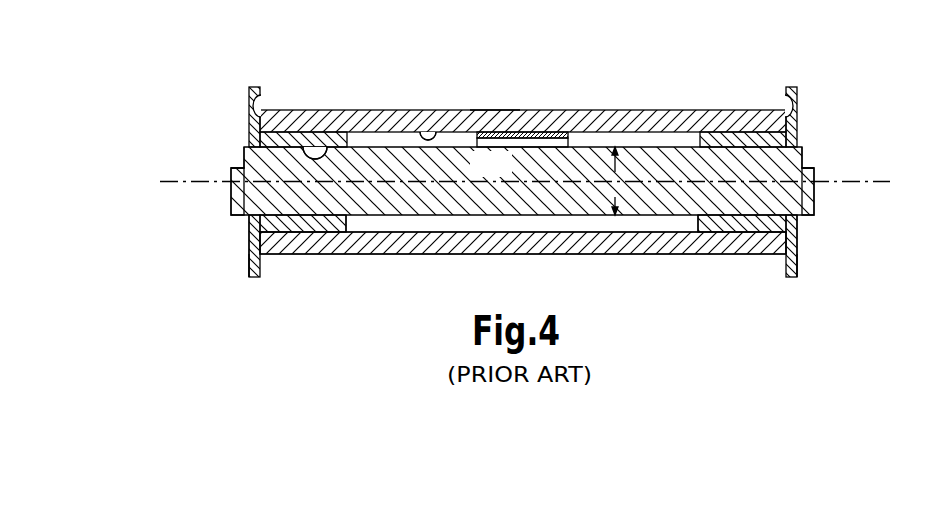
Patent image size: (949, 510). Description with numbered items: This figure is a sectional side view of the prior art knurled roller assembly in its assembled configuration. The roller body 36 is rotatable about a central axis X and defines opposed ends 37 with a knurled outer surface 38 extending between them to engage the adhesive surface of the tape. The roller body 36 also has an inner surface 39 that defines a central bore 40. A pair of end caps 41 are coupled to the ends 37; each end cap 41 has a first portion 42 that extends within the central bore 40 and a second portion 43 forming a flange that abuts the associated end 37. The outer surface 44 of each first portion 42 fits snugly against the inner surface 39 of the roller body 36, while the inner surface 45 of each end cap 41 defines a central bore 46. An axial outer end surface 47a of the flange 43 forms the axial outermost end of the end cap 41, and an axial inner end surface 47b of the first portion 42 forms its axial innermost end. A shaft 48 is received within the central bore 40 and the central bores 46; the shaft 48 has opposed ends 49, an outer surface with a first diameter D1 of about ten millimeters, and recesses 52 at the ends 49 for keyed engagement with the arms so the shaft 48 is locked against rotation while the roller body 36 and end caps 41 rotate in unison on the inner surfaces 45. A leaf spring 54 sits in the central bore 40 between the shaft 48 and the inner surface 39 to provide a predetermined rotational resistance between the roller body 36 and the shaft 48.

The roller body 36 is at (621, 124).
The opposed ends 37 is at (264, 98).
The outer surface 38 is at (493, 110).
The inner surface 39 is at (431, 128).
The central bore 40 is at (445, 94).
The end caps 41 is at (249, 233).
The first portion 42 is at (312, 222).
The second portion 43 is at (254, 277).
The outer surface 44 is at (290, 233).
The inner surface 45 is at (326, 148).
The central bore 46 is at (341, 104).
The axial outer end surface 47a is at (249, 260).
The axial inner end surface 47b is at (346, 220).
The shaft 48 is at (506, 173).
The opposed ends 49 is at (231, 205).
The recesses 52 is at (238, 162).
The leaf spring 54 is at (532, 135).
The central axis X is at (845, 180).
The first diameter D1 is at (613, 181).